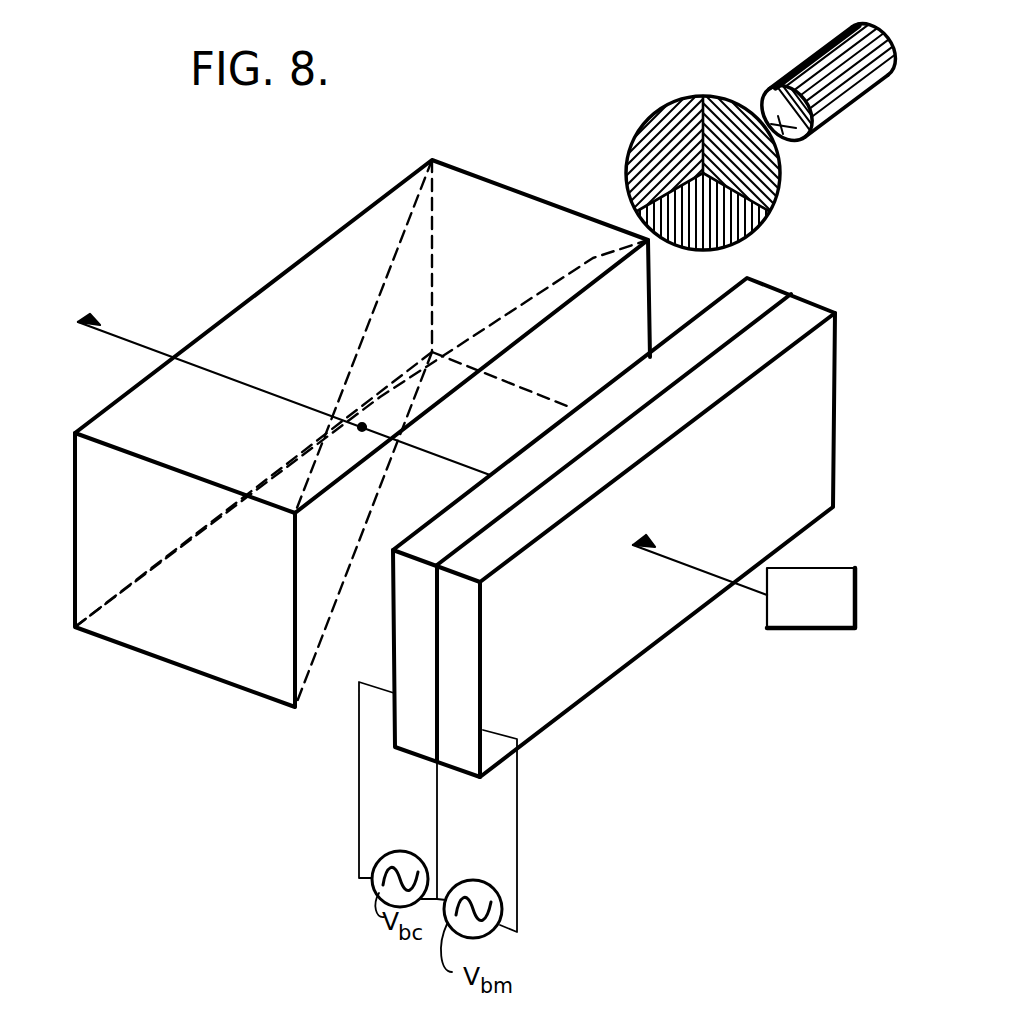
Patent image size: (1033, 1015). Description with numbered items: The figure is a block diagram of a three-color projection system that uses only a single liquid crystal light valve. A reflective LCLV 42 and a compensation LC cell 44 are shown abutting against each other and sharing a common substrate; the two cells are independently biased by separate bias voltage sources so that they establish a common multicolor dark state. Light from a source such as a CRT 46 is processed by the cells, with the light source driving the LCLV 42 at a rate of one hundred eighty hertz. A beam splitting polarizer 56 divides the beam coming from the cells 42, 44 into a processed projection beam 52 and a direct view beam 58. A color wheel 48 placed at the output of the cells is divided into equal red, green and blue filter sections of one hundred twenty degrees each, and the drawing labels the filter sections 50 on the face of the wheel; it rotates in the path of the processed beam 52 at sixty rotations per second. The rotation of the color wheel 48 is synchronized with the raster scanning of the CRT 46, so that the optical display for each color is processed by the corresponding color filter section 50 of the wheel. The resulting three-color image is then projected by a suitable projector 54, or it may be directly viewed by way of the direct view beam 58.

The reflective LCLV 42 is at (818, 305).
The compensation LC cell 44 is at (763, 284).
The CRT 46 is at (852, 630).
The color wheel 48 is at (643, 130).
The polarized regions of beam 50 is at (752, 172).
The processed beam 52 is at (640, 218).
The projector 54 is at (821, 135).
The beam splitting polarizer 56 is at (75, 541).
The direct view beam 58 is at (162, 353).